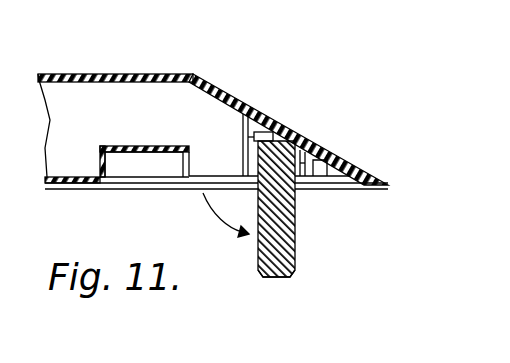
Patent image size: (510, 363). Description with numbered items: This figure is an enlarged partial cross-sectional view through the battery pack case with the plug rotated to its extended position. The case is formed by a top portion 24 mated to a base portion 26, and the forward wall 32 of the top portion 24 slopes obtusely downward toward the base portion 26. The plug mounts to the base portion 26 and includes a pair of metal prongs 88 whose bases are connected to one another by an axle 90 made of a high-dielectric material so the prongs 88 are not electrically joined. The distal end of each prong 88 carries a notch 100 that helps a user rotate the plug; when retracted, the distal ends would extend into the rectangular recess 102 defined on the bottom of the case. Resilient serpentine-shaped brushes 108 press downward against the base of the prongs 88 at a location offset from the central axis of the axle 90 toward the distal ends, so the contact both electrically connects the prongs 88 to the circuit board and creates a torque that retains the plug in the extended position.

The top portion 24 is at (124, 64).
The forward wall 32 is at (212, 83).
The brushes 108 is at (266, 132).
The axle 90 is at (297, 140).
The prongs 88 is at (277, 218).
The notch 100 is at (278, 279).
The rectangular recess 102 is at (131, 165).
The base portion 26 is at (82, 194).